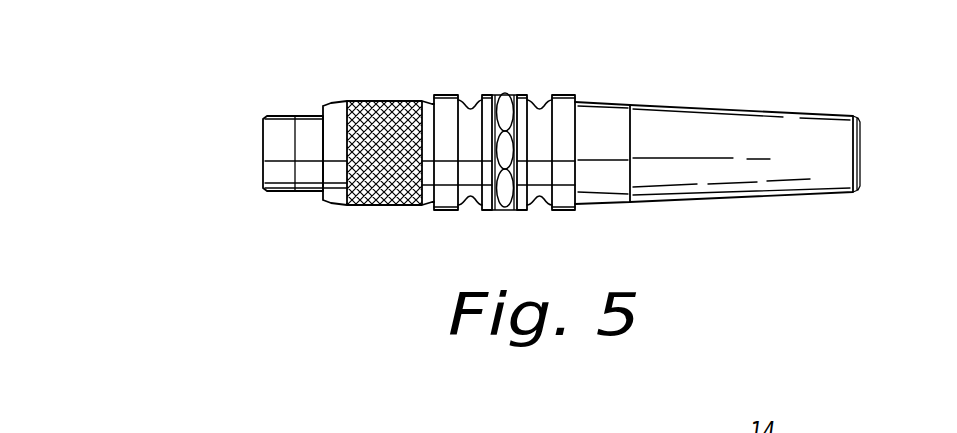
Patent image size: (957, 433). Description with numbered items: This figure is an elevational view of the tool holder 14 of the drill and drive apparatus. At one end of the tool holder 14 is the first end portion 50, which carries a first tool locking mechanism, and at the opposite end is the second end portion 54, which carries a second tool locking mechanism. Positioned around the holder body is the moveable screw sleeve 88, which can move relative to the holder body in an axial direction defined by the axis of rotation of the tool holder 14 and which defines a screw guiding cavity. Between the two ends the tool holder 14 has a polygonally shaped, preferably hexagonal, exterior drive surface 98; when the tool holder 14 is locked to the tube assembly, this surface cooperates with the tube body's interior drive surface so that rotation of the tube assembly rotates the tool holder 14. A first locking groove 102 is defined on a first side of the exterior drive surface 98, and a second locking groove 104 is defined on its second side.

The tool holder 14 is at (656, 80).
The first end portion 50 is at (307, 86).
The second end portion 54 is at (833, 104).
The screw sleeve 88 is at (797, 182).
The exterior drive surface 98 is at (505, 104).
The first locking groove 102 is at (465, 205).
The second locking groove 104 is at (538, 210).